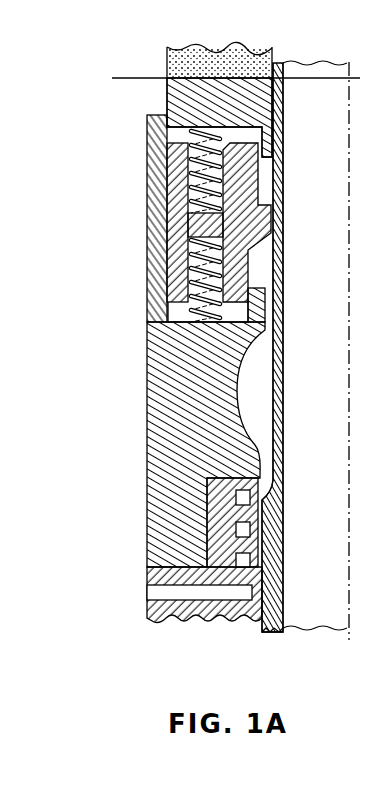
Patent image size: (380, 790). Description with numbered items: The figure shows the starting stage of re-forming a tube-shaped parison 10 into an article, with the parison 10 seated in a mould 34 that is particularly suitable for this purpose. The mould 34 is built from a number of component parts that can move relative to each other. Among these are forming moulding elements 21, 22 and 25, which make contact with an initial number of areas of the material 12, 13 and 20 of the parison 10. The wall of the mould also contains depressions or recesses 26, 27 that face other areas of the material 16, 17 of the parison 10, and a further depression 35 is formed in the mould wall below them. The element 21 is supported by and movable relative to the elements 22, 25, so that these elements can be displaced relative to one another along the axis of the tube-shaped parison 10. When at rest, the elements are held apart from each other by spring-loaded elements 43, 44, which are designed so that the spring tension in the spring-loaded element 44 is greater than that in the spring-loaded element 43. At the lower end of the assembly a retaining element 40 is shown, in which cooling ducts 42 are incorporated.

The parison 10 is at (274, 520).
The area of the material 12 is at (277, 225).
The area of the material 13 is at (283, 110).
The area of the material 16 is at (283, 276).
The area of the material 17 is at (283, 183).
The area of the material 20 is at (283, 300).
The forming moulding element 21 is at (268, 236).
The forming moulding element 22 is at (281, 92).
The forming moulding element 25 is at (266, 307).
The depression or recess 26 is at (262, 258).
The depression or recess 27 is at (268, 200).
The mould 34 is at (103, 365).
The further depression 35 is at (255, 397).
The retaining element 40 is at (253, 577).
The cooling ducts 42 is at (300, 502).
The spring-loaded element 43 is at (172, 243).
The spring-loaded element 44 is at (168, 151).